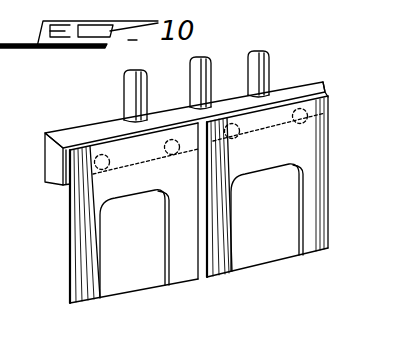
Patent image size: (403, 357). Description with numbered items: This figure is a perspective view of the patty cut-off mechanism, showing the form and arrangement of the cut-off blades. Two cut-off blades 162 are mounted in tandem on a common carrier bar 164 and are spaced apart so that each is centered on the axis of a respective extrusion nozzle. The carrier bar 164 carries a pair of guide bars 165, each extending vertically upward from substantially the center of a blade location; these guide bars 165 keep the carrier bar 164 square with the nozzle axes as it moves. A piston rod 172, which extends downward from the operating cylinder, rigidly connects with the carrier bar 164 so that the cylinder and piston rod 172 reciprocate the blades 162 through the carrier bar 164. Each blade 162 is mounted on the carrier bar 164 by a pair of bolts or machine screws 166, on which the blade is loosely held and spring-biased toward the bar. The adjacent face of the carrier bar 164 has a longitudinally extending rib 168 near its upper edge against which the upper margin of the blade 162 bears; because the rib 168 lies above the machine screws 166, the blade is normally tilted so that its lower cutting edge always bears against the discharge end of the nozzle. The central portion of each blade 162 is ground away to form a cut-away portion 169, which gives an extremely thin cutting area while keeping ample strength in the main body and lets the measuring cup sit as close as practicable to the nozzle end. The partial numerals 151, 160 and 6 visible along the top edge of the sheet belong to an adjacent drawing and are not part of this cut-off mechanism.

The cut-off blade 162 is at (90, 210).
The carrier bar 164 is at (52, 148).
The guide bar 165 is at (128, 88).
The machine screw 166 is at (164, 150).
The rib 168 is at (65, 150).
The cut-away portion 169 is at (145, 252).
The piston rod 172 is at (193, 70).
The member 151 is at (183, 7).
The member 160 is at (225, 15).
The member 6 is at (293, 1).